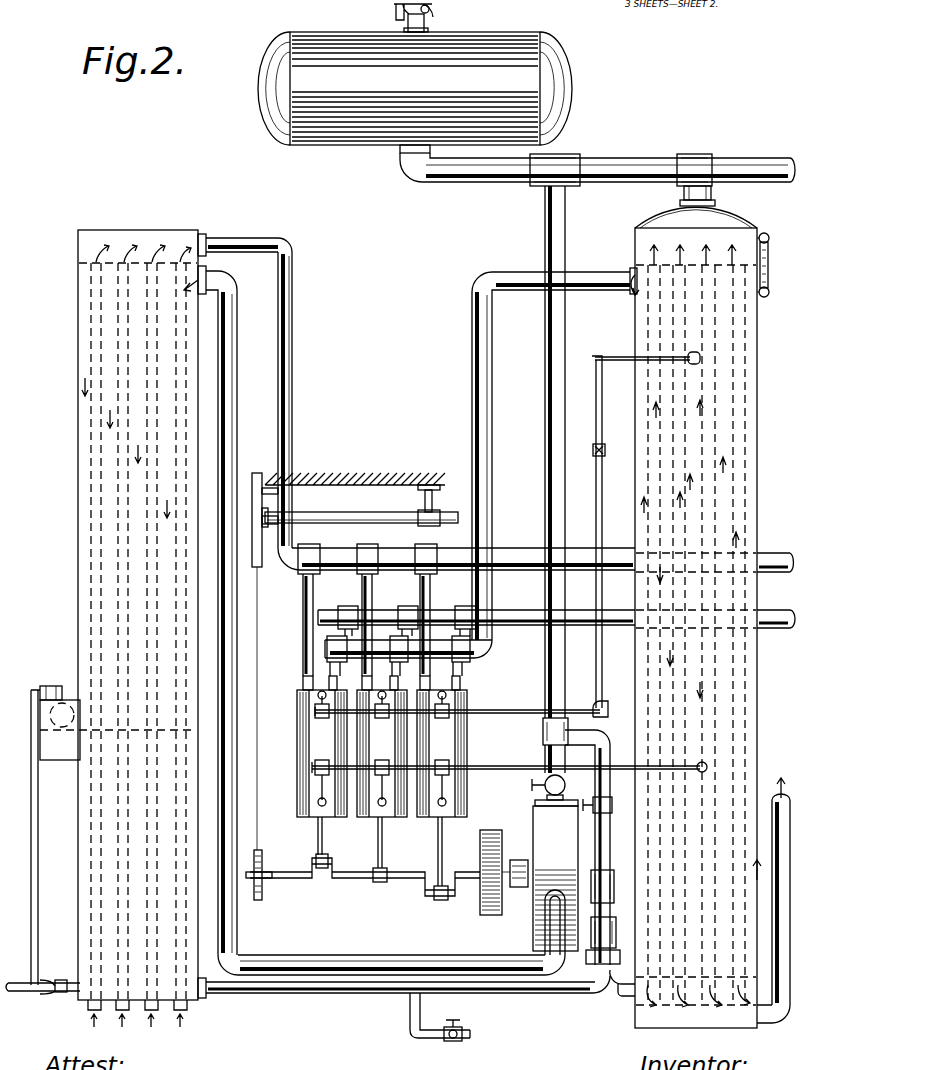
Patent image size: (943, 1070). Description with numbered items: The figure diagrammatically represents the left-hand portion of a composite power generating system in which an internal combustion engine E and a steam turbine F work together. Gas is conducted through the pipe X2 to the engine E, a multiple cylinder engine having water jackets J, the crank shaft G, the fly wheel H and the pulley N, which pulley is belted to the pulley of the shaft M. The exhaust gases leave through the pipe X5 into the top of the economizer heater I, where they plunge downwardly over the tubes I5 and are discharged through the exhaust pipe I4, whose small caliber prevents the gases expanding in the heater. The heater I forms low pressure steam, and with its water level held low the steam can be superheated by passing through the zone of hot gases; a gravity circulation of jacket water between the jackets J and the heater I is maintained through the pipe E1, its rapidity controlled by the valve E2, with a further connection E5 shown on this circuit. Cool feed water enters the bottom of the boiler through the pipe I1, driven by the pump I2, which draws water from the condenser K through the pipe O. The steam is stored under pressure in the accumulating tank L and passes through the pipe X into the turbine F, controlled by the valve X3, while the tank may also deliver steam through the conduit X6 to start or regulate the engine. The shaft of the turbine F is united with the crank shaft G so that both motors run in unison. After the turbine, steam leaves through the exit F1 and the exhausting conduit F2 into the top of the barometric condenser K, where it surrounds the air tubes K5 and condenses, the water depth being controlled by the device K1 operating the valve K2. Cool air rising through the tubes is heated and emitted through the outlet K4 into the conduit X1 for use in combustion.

The accumulating tank L is at (348, 146).
The pipe X is at (790, 172).
The economizer heater I is at (757, 419).
The condenser tubes I5 is at (700, 342).
The exhaust pipe X5 is at (487, 522).
The barometric condenser K is at (120, 628).
The heater tubes K5 is at (192, 1046).
The outlet K4 is at (205, 240).
The conduit X1 is at (292, 375).
The shaft M is at (346, 516).
The gas pipe X2 is at (785, 630).
The water jackets J is at (302, 740).
The pipe E1 is at (486, 710).
The valve E2 is at (600, 453).
The pipe connection E5 is at (618, 762).
The internal combustion engine E is at (509, 751).
The conduit X6 is at (546, 778).
The turbine F is at (540, 836).
The exit F1 is at (547, 905).
The fly wheel H is at (484, 906).
The crank shaft G is at (405, 878).
The pulley N is at (262, 866).
The pipe O is at (268, 977).
The exhausting conduit F2 is at (325, 1032).
The valve K2 is at (62, 996).
The water level control device K1 is at (44, 690).
The pump I2 is at (607, 933).
The feed water inlet pipe I1 is at (622, 997).
The valve X3 is at (460, 1042).
The exhaust pipe I4 is at (780, 1028).